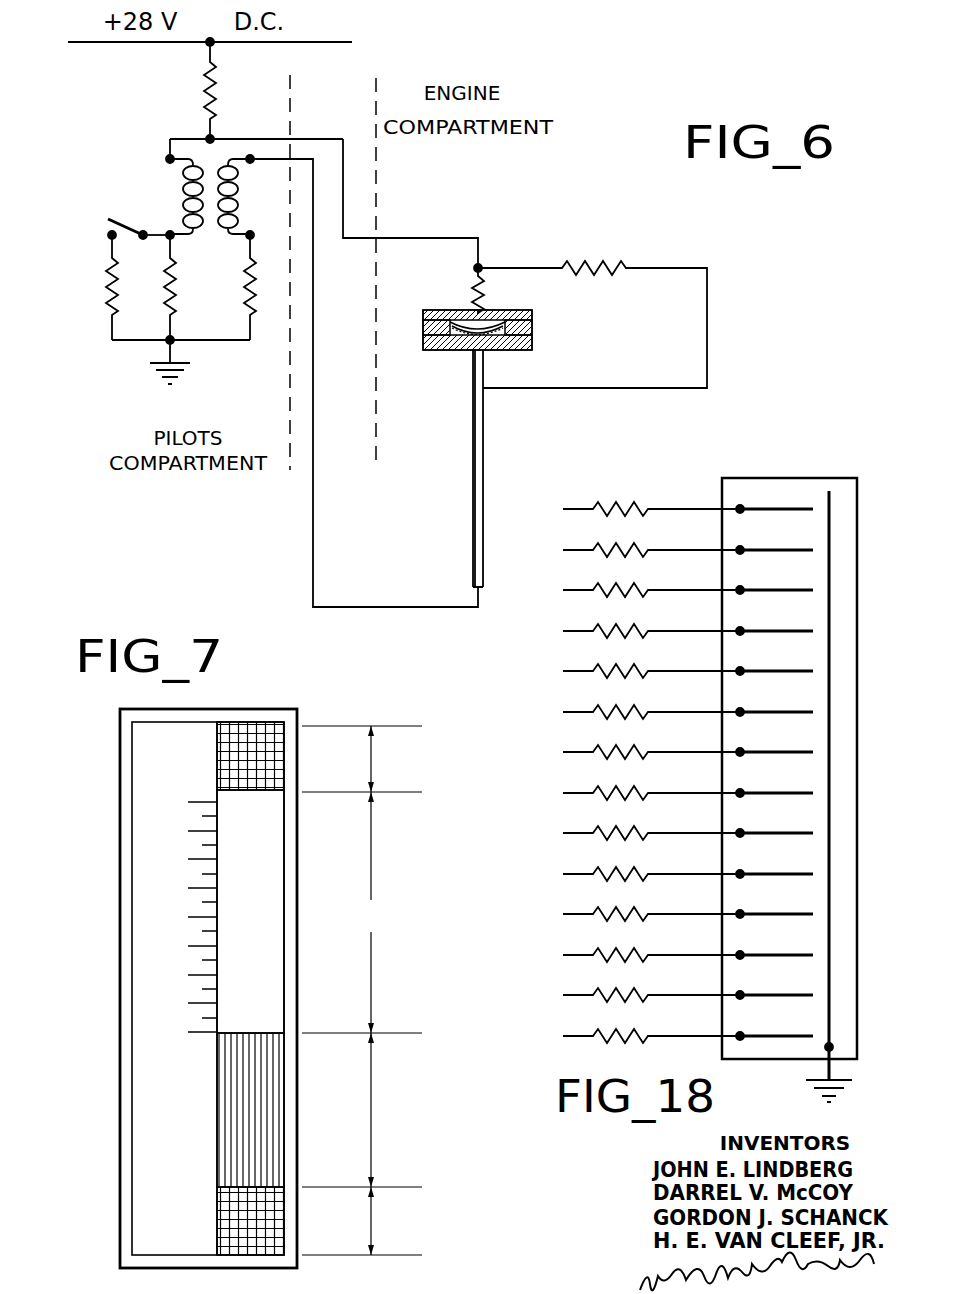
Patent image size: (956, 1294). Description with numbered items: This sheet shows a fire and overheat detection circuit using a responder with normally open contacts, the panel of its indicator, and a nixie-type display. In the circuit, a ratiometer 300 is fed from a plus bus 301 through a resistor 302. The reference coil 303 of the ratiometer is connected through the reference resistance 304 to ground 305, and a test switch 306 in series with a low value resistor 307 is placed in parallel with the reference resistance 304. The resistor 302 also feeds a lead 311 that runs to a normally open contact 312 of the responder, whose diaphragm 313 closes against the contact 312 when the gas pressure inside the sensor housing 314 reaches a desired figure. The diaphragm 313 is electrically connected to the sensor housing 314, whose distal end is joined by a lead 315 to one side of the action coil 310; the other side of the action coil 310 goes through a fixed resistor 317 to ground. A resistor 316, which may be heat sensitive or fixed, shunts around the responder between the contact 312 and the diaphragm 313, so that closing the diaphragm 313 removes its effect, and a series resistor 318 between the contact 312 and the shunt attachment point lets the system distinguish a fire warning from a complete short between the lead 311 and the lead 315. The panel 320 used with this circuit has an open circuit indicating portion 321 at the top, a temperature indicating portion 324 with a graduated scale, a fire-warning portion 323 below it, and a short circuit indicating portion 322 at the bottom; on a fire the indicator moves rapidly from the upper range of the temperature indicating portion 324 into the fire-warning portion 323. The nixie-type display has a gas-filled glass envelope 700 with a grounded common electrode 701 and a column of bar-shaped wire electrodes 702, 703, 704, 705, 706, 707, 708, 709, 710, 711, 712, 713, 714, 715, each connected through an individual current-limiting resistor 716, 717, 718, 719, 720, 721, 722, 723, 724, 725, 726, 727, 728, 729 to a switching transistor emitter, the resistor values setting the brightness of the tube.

In FIG. 6, the ratiometer 300 is at (197, 134).
In FIG. 6, the plus bus 301 is at (130, 44).
In FIG. 6, the resistor 302 is at (223, 90).
In FIG. 6, the reference coil 303 is at (180, 192).
In FIG. 6, the reference resistance 304 is at (180, 292).
In FIG. 6, the ground 305 is at (186, 364).
In FIG. 6, the test switch 306 is at (122, 218).
In FIG. 6, the low value resistor 307 is at (102, 298).
In FIG. 6, the action coil 310 is at (238, 196).
In FIG. 6, the lead 311 is at (443, 238).
In FIG. 6, the normally open contact 312 is at (475, 320).
In FIG. 6, the diaphragm 313 is at (464, 338).
In FIG. 6, the sensor housing 314 is at (486, 447).
In FIG. 6, the lead 315 is at (415, 606).
In FIG. 6, the resistor 316 is at (592, 266).
In FIG. 6, the resistor 317 is at (248, 306).
In FIG. 6, the resistor 318 is at (496, 289).
In FIG. 7, the panel 320 is at (299, 912).
In FIG. 7, the open circuit indicating portion 321 is at (282, 762).
In FIG. 7, the short circuit indicating portion 322 is at (275, 1225).
In FIG. 7, the fire-warning portion 323 is at (273, 1100).
In FIG. 7, the temperature indicating portion 324 is at (267, 948).
In FIG. 18, the glass envelope 700 is at (851, 822).
In FIG. 18, the grounded common electrode 701 is at (831, 898).
In FIG. 18, the wire electrode 702 is at (758, 507).
In FIG. 18, the wire electrode 703 is at (758, 548).
In FIG. 18, the wire electrode 704 is at (758, 588).
In FIG. 18, the wire electrode 705 is at (758, 629).
In FIG. 18, the wire electrode 706 is at (758, 669).
In FIG. 18, the wire electrode 707 is at (758, 710).
In FIG. 18, the wire electrode 708 is at (758, 750).
In FIG. 18, the wire electrode 709 is at (758, 791).
In FIG. 18, the wire electrode 710 is at (758, 831).
In FIG. 18, the wire electrode 711 is at (758, 872).
In FIG. 18, the wire electrode 712 is at (758, 912).
In FIG. 18, the wire electrode 713 is at (758, 953).
In FIG. 18, the wire electrode 714 is at (758, 993).
In FIG. 18, the wire electrode 715 is at (758, 1034).
In FIG. 18, the individual resistor 716 is at (615, 503).
In FIG. 18, the individual resistor 717 is at (615, 544).
In FIG. 18, the individual resistor 718 is at (615, 584).
In FIG. 18, the individual resistor 719 is at (615, 625).
In FIG. 18, the individual resistor 720 is at (615, 665).
In FIG. 18, the individual resistor 721 is at (615, 706).
In FIG. 18, the individual resistor 722 is at (615, 746).
In FIG. 18, the individual resistor 723 is at (615, 787).
In FIG. 18, the individual resistor 724 is at (615, 827).
In FIG. 18, the individual resistor 725 is at (615, 868).
In FIG. 18, the individual resistor 726 is at (615, 908).
In FIG. 18, the individual resistor 727 is at (615, 949).
In FIG. 18, the individual resistor 728 is at (615, 989).
In FIG. 18, the individual resistor 729 is at (615, 1030).